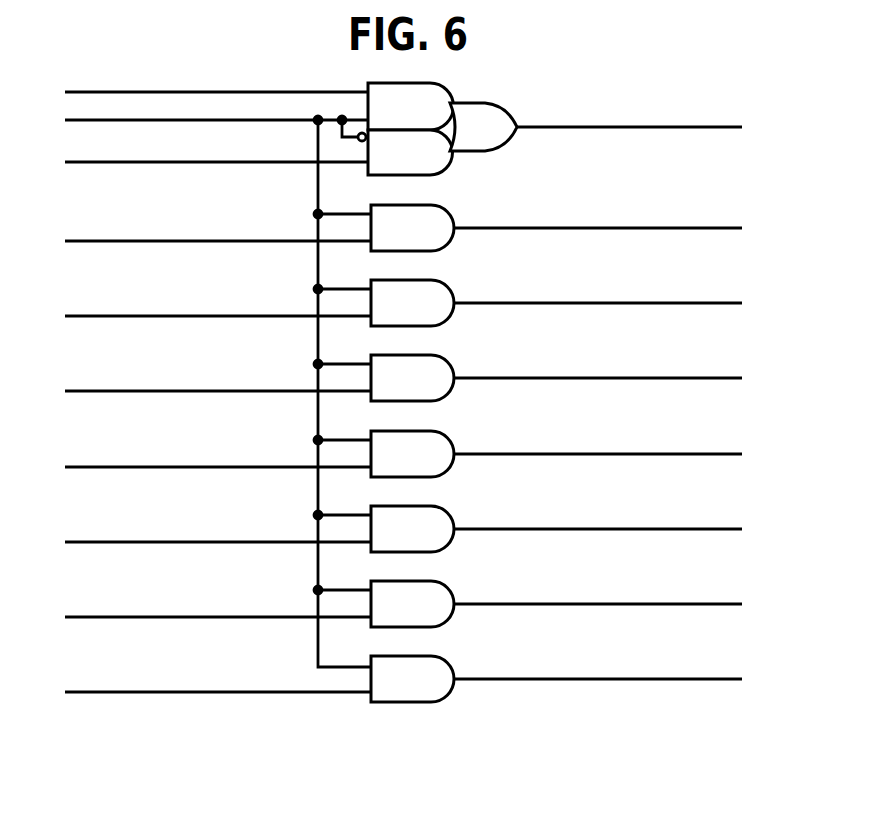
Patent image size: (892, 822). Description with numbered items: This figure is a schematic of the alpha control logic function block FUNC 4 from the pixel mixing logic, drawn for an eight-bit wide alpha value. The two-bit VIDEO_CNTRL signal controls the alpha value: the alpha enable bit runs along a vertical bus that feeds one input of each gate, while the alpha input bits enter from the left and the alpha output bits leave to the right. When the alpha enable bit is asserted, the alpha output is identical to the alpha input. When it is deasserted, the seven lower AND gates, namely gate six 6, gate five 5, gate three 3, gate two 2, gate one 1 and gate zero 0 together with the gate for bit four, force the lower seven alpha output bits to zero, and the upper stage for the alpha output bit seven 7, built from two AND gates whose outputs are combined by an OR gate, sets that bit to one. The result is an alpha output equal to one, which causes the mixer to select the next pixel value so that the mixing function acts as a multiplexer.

The alpha control logic function block (FUNC4) 4 is at (313, 716).
The alpha_OUT_7 bit stage 7 is at (403, 119).
The AND6 gate 6 is at (403, 225).
The AND5 gate 5 is at (403, 300).
The AND3 gate 3 is at (403, 451).
The AND2 gate 2 is at (403, 526).
The AND1 gate 1 is at (403, 601).
The AND0 gate 0 is at (403, 676).